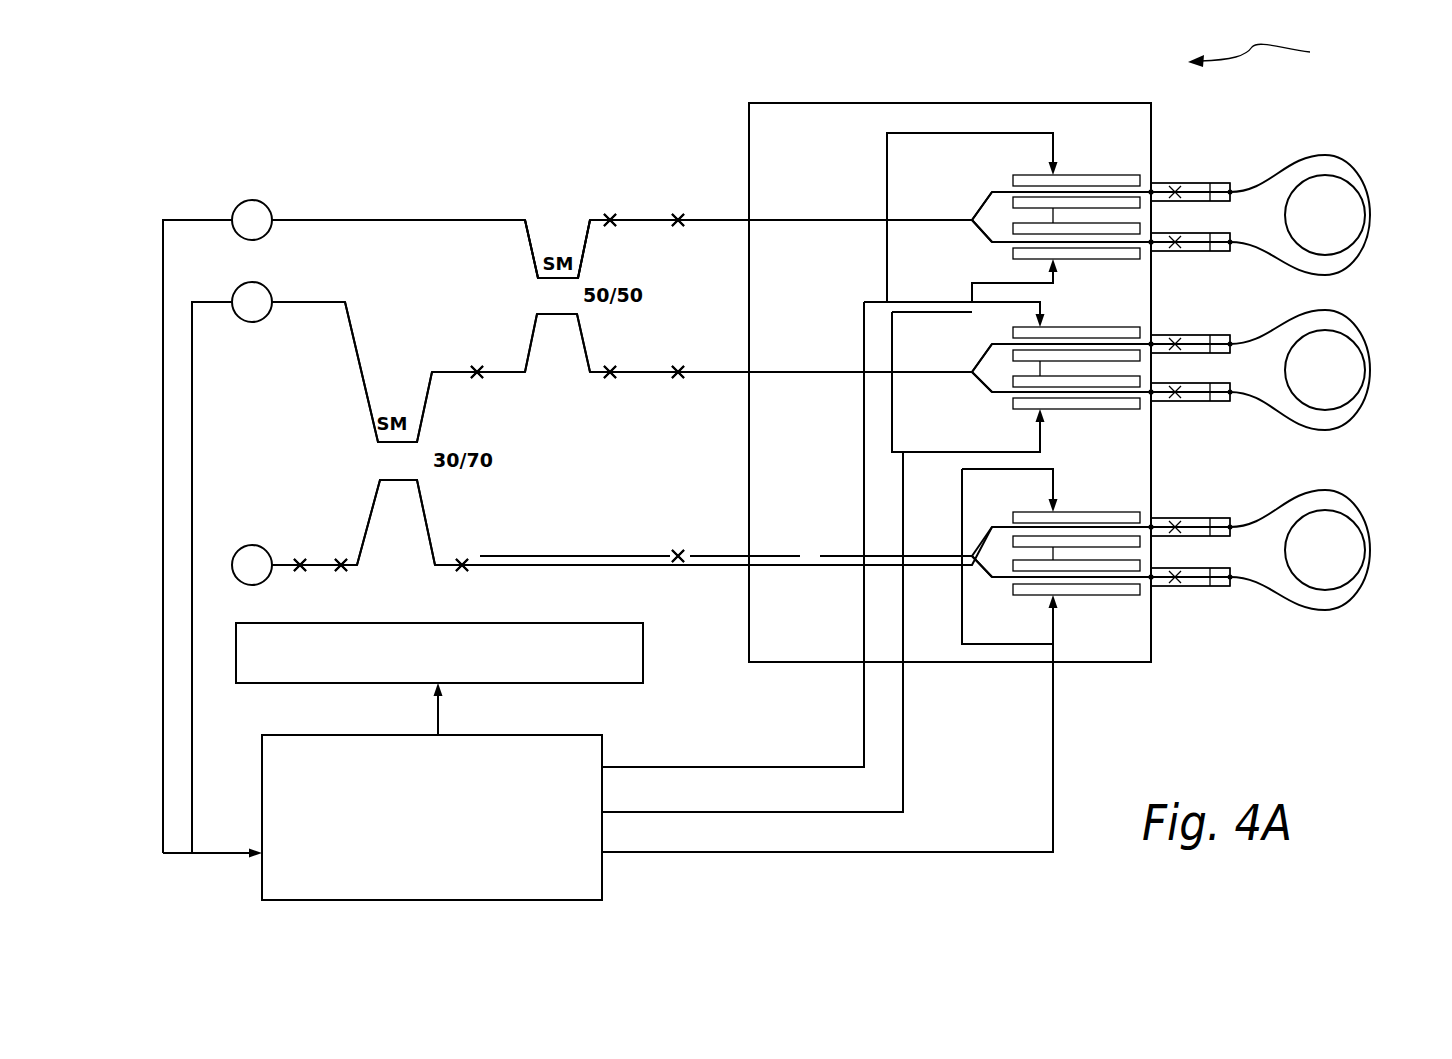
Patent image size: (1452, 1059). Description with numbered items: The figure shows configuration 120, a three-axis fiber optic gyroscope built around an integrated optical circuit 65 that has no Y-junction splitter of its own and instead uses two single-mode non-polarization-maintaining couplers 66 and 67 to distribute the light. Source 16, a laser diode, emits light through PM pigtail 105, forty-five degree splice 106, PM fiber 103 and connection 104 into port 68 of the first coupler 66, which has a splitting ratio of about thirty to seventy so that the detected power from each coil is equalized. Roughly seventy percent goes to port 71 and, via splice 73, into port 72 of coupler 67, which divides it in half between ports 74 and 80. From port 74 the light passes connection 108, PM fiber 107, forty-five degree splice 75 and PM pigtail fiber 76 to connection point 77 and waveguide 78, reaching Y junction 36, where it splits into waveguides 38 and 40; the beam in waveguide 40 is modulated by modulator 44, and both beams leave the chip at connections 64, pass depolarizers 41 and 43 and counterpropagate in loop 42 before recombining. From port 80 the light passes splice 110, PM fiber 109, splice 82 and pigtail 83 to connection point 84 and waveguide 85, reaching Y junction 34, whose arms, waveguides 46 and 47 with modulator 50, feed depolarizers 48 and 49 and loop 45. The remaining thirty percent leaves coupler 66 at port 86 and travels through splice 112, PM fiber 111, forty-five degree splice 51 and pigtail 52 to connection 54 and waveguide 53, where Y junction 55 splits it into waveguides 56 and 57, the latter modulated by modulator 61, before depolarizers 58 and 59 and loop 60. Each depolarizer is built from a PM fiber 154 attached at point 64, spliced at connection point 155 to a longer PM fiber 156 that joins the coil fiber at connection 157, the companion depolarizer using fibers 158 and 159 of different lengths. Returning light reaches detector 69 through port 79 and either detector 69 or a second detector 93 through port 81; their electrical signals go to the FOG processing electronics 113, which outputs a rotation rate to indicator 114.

The configuration 120 is at (1269, 54).
The integrated optical circuit 65 is at (1150, 103).
The detector 69 is at (250, 200).
The second detector 93 is at (252, 322).
The source 16 is at (252, 545).
The port 81 is at (352, 305).
The port 79 is at (535, 222).
The port 80 is at (585, 220).
The coupler 67 is at (545, 288).
The PM fiber 109 is at (655, 220).
The connection splice 110 is at (610, 225).
The PM pigtail 83 is at (678, 226).
The 45 degree splice 82 is at (710, 218).
The connection point 84 is at (755, 218).
The waveguide 85 is at (822, 218).
The port 71 is at (430, 372).
The splice 73 is at (477, 368).
The port 72 is at (537, 360).
The port 74 is at (578, 360).
The connection 108 is at (612, 368).
The splice 75 is at (680, 368).
The PM fiber 107 is at (650, 376).
The PM pigtail fiber 76 is at (725, 376).
The connection point 77 is at (762, 370).
The waveguide 78 is at (820, 370).
The coupler 66 is at (390, 445).
The splice 106 is at (300, 560).
The PM pigtail 105 is at (265, 582).
The PM fiber 103 is at (322, 570).
The connection 104 is at (345, 571).
The port 68 is at (370, 520).
The port 86 is at (465, 558).
The splice 112 is at (463, 571).
The PM fiber 111 is at (578, 553).
The splice 51 is at (678, 550).
The PM pigtail 52 is at (692, 560).
The connection 54 is at (757, 553).
The waveguide 53 is at (810, 553).
The indicator 114 is at (518, 623).
The FOG processing electronics 113 is at (343, 735).
The Y junction 34 is at (970, 218).
The waveguide 46 is at (995, 191).
The waveguide 47 is at (992, 243).
The modulator 50 is at (1062, 175).
The waveguide 38 is at (996, 346).
The Y junction 36 is at (972, 374).
The waveguide 40 is at (996, 394).
The modulator 44 is at (1062, 327).
The waveguide 56 is at (1000, 527).
The Y junction 55 is at (972, 558).
The waveguide 57 is at (1000, 579).
The modulator 61 is at (1070, 512).
The connection 64 is at (1153, 190).
The PM fiber 154 is at (1163, 183).
The connection point 155 is at (1176, 188).
The PM fiber 156 is at (1212, 183).
The fiber 158 is at (1160, 251).
The fiber 159 is at (1212, 251).
The depolarizer 48 is at (1213, 183).
The depolarizer 49 is at (1180, 240).
The depolarizer 41 is at (1213, 335).
The depolarizer 43 is at (1232, 400).
The depolarizer 58 is at (1215, 518).
The depolarizer 59 is at (1232, 586).
The connection 157 is at (1236, 191).
The loop 45 is at (1370, 212).
The loop 42 is at (1370, 368).
The loop 60 is at (1370, 550).